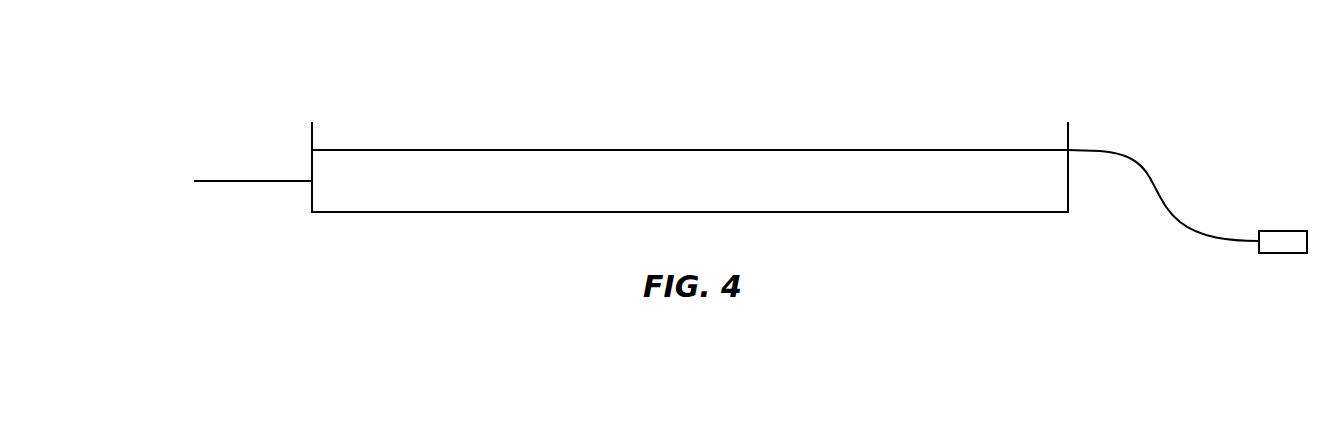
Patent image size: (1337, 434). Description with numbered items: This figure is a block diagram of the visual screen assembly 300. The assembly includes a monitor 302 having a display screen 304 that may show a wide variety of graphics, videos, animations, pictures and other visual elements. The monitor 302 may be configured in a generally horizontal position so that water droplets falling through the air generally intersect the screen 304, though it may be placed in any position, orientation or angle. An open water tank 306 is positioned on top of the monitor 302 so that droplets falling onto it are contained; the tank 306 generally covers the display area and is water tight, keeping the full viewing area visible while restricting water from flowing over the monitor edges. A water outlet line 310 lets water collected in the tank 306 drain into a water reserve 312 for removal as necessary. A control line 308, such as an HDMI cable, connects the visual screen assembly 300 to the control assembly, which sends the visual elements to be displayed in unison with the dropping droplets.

The visual screen assembly 300 is at (922, 73).
The monitor 302 is at (1069, 193).
The display screen 304 is at (381, 150).
The open water tank 306 is at (1069, 134).
The control line 308 is at (251, 185).
The water outlet line 310 is at (1145, 168).
The water reserve 312 is at (1283, 230).